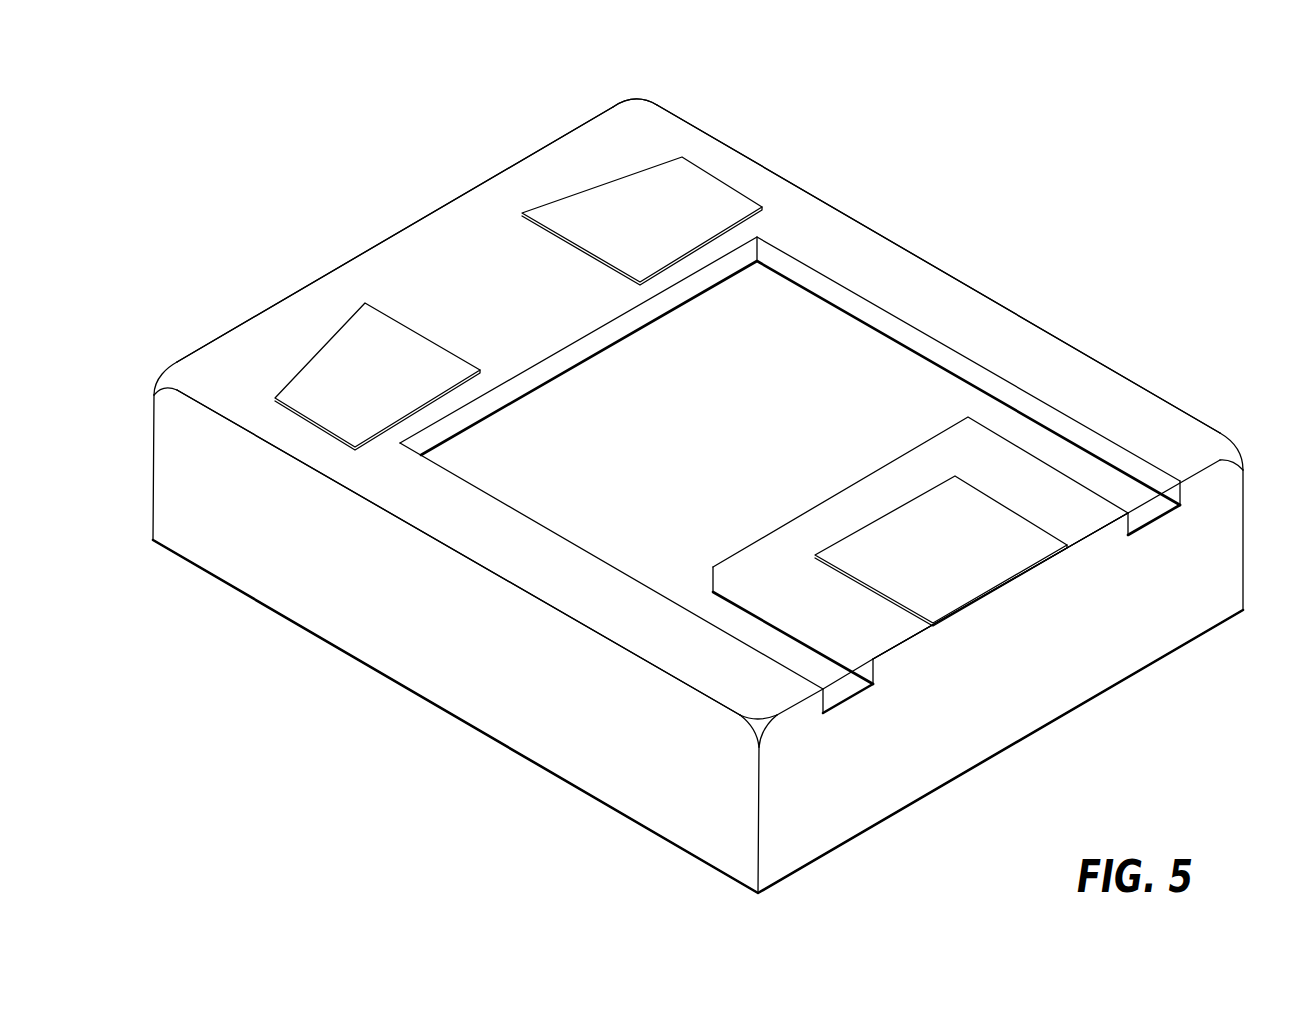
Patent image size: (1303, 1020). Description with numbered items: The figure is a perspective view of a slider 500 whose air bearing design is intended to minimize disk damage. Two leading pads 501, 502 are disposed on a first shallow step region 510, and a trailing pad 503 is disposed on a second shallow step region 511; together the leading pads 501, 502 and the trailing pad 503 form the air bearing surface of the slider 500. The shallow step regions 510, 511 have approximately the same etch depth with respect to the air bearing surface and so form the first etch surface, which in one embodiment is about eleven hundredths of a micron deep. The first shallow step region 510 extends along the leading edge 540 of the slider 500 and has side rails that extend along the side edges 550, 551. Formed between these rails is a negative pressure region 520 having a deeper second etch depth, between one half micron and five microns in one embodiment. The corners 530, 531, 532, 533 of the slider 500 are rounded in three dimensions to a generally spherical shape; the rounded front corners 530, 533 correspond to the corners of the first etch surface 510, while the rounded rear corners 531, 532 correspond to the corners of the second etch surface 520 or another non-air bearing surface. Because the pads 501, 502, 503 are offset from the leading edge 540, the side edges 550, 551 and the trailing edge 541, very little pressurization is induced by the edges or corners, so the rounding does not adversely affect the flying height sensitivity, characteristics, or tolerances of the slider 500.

The slider 500 is at (1147, 142).
The leading pad 501 is at (349, 382).
The leading pad 502 is at (629, 226).
The trailing pad 503 is at (923, 563).
The first shallow step region 510 is at (492, 298).
The second shallow step region 511 is at (763, 573).
The negative pressure region 520 is at (659, 422).
The rounded front corner 530 is at (636, 94).
The rounded rear corner 531 is at (1235, 447).
The rounded rear corner 532 is at (757, 728).
The rounded front corner 533 is at (162, 383).
The leading edge 540 is at (370, 230).
The trailing edge 541 is at (1005, 593).
The side edge 550 is at (1009, 295).
The side edge 551 is at (495, 583).